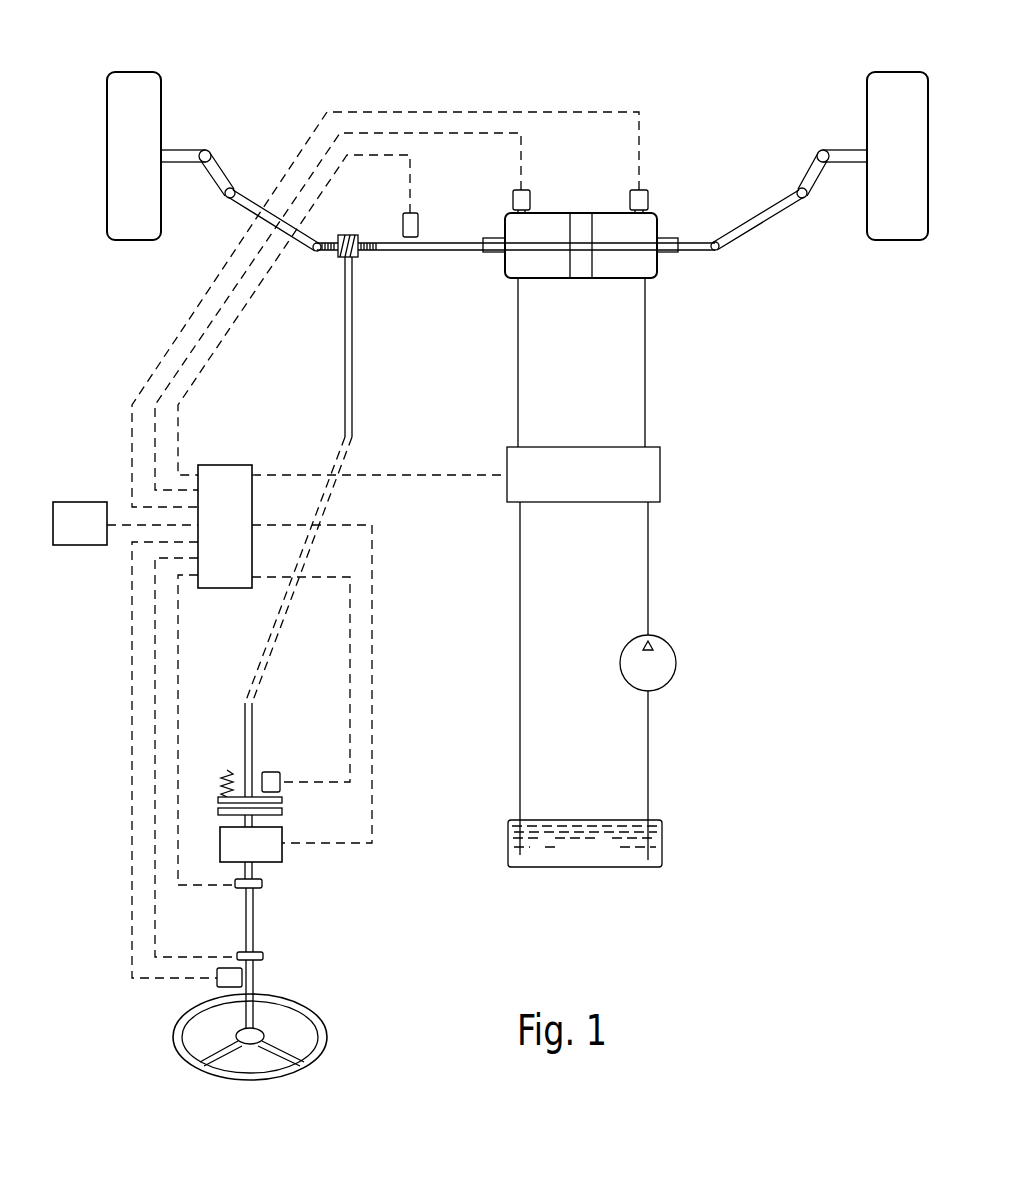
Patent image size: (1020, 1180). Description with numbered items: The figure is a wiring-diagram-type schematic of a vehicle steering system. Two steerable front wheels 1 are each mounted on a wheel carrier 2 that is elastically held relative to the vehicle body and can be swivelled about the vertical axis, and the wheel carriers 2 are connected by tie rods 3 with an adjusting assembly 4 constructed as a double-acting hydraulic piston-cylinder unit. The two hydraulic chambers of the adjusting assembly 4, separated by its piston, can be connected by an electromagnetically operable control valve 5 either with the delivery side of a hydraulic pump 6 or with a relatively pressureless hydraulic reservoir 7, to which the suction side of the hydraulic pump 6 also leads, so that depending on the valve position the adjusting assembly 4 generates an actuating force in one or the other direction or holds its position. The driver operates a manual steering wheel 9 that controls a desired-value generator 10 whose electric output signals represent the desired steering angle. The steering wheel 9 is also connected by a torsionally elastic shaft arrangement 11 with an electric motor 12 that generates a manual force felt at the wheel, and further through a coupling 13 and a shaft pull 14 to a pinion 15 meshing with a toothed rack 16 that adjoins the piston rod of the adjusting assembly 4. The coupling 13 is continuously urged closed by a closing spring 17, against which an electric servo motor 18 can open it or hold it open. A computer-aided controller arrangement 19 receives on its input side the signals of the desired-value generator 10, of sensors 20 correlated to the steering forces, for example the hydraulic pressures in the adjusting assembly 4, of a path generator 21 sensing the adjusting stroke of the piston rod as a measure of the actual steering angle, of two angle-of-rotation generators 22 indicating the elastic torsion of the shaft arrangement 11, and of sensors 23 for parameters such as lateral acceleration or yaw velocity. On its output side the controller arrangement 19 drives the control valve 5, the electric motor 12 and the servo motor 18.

The steerable front wheels 1 is at (121, 84).
The wheel carrier 2 is at (177, 155).
The tie rods 3 is at (250, 213).
The adjusting assembly 4 is at (660, 262).
The control valve 5 is at (655, 490).
The hydraulic pump 6 is at (670, 670).
The hydraulic reservoir 7 is at (662, 855).
The manual steering wheel 9 is at (285, 1073).
The desired-value generator 10 is at (218, 983).
The torsionally elastic shaft arrangement 11 is at (255, 937).
The electric motor 12 is at (262, 857).
The coupling 13 is at (283, 812).
The shaft pull 14 is at (270, 640).
The pinion 15 is at (340, 258).
The toothed rack 16 is at (370, 252).
The closing spring 17 is at (225, 770).
The electric servo motor 18 is at (270, 772).
The controller arrangement 19 is at (217, 470).
The sensors 20 is at (630, 205).
The path generator 21 is at (418, 225).
The angle-of-rotation generators 22 is at (285, 885).
The sensors 23 is at (68, 510).